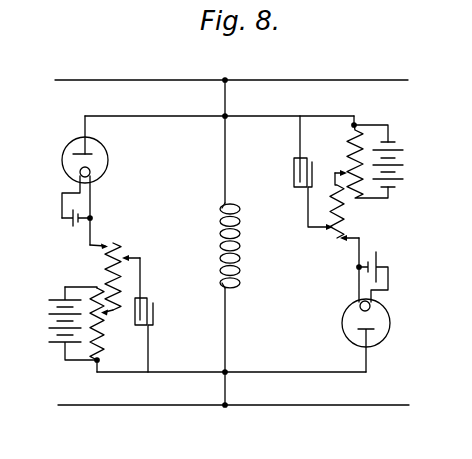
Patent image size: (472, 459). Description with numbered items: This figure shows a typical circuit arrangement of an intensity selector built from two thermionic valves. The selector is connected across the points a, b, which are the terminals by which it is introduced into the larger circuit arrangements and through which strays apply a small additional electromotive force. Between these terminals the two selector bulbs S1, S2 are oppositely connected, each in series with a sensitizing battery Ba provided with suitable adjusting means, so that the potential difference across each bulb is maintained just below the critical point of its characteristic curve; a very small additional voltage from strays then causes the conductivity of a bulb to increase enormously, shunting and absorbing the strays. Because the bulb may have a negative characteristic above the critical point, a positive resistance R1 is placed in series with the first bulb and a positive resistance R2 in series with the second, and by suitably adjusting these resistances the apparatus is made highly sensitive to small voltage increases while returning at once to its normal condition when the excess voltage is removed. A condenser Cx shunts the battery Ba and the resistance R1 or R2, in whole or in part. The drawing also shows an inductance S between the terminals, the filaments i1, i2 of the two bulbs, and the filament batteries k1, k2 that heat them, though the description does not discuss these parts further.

The point of connection a is at (231, 67).
The point of connection b is at (233, 421).
The coil / inductance S is at (241, 245).
The selector bulb S1 is at (108, 158).
The first cathode / filament i1 is at (64, 194).
The first filament battery k1 is at (78, 176).
The positive resistance R1 is at (115, 279).
The condenser Cx is at (234, 244).
The sensitizing battery Ba is at (216, 244).
The positive resistance R2 is at (328, 211).
The second filament battery k2 is at (353, 276).
The selector bulb S2 is at (378, 335).
The second cathode / filament i2 is at (344, 327).